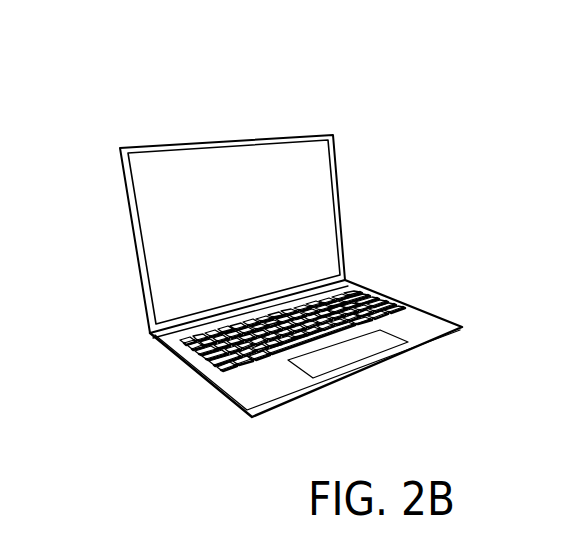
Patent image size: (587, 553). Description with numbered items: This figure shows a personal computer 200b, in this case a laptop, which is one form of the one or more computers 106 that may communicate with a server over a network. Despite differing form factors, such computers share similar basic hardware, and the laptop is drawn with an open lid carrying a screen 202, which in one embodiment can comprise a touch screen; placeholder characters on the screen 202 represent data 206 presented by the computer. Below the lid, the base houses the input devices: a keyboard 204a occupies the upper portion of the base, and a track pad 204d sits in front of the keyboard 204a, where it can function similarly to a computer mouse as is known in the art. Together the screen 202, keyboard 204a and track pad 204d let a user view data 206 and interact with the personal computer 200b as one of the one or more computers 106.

The personal computer 200b is at (297, 88).
The one or more computers 106 is at (236, 254).
The screen 202 is at (178, 250).
The data 206 is at (220, 187).
The keyboard 204a is at (180, 338).
The track pad 204d is at (313, 378).